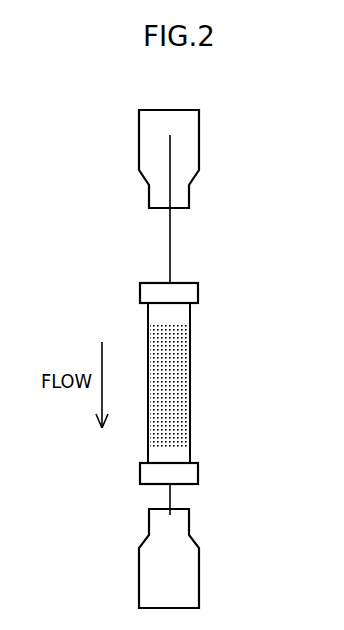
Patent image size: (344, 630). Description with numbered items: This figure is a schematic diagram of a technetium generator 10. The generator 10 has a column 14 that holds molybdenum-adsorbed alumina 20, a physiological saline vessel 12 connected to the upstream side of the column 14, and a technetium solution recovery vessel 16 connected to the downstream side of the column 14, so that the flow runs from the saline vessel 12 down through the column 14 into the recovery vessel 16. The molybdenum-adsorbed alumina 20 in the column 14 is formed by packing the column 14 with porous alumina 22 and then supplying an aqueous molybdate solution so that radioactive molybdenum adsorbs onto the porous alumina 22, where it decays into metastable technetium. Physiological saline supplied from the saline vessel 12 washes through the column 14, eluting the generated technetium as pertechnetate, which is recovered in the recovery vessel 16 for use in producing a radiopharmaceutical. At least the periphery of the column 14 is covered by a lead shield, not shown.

The 99mTc generator 10 is at (70, 211).
The physiological saline vessel 12 is at (199, 137).
The column 14 is at (190, 333).
The 99Mo-adsorbed alumina 20 is at (191, 388).
The porous alumina 22 is at (168, 385).
The 99mTc solution recovery vessel 16 is at (199, 569).